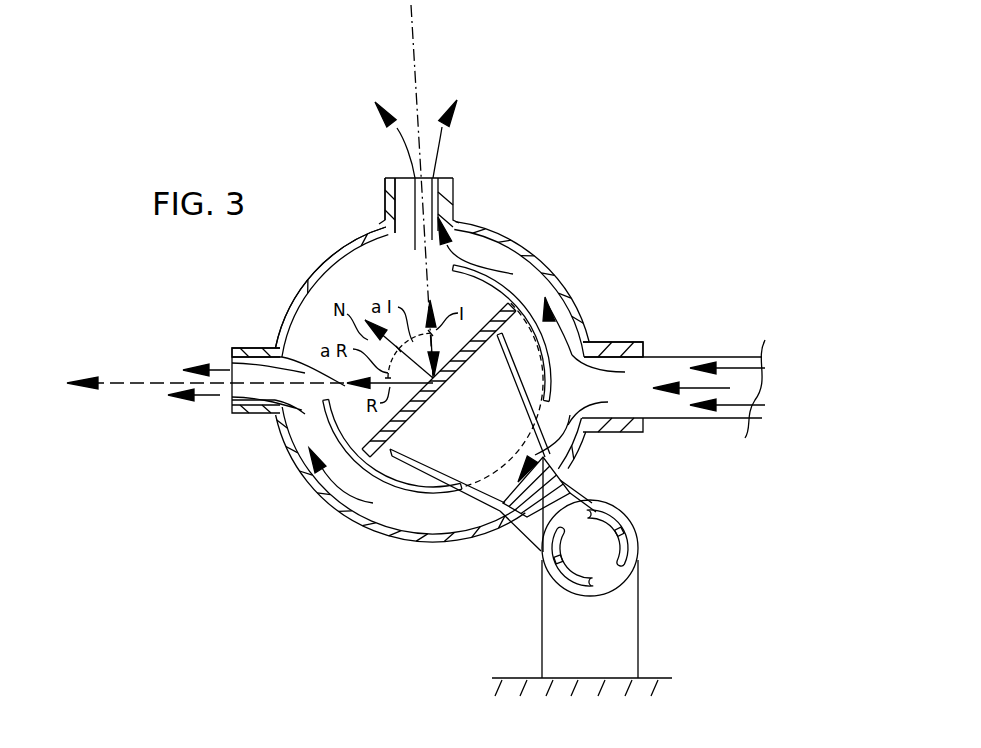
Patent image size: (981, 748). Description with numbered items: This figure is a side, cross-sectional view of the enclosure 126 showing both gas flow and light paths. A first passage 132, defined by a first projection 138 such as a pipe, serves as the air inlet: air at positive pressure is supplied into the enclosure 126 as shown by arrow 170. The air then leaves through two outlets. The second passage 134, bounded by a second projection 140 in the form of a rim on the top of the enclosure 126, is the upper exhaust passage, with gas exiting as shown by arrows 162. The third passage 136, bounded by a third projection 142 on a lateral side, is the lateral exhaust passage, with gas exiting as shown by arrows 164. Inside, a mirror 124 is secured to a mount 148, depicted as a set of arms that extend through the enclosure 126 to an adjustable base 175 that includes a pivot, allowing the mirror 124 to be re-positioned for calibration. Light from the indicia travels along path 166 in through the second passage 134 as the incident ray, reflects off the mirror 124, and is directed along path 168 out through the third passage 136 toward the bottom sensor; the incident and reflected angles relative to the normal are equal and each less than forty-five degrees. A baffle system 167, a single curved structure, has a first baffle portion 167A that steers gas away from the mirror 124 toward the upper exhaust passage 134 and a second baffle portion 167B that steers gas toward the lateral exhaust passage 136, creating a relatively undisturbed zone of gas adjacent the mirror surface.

The mirror 124 is at (518, 262).
The enclosure 126 is at (330, 262).
The first passage 132 is at (652, 420).
The second passage 134 is at (393, 178).
The third passage 136 is at (232, 408).
The first projection 138 is at (617, 342).
The second projection 140 is at (384, 205).
The third projection 142 is at (268, 346).
The mount 148 is at (473, 498).
The arrows 162 is at (440, 152).
The arrows 164 is at (233, 367).
The path 166 is at (414, 64).
The baffle system 167 is at (408, 526).
The first baffle portion 167A is at (510, 274).
The second baffle portion 167B is at (293, 440).
The path 168 is at (125, 384).
The arrow 170 is at (735, 368).
The adjustable base 175 is at (640, 555).